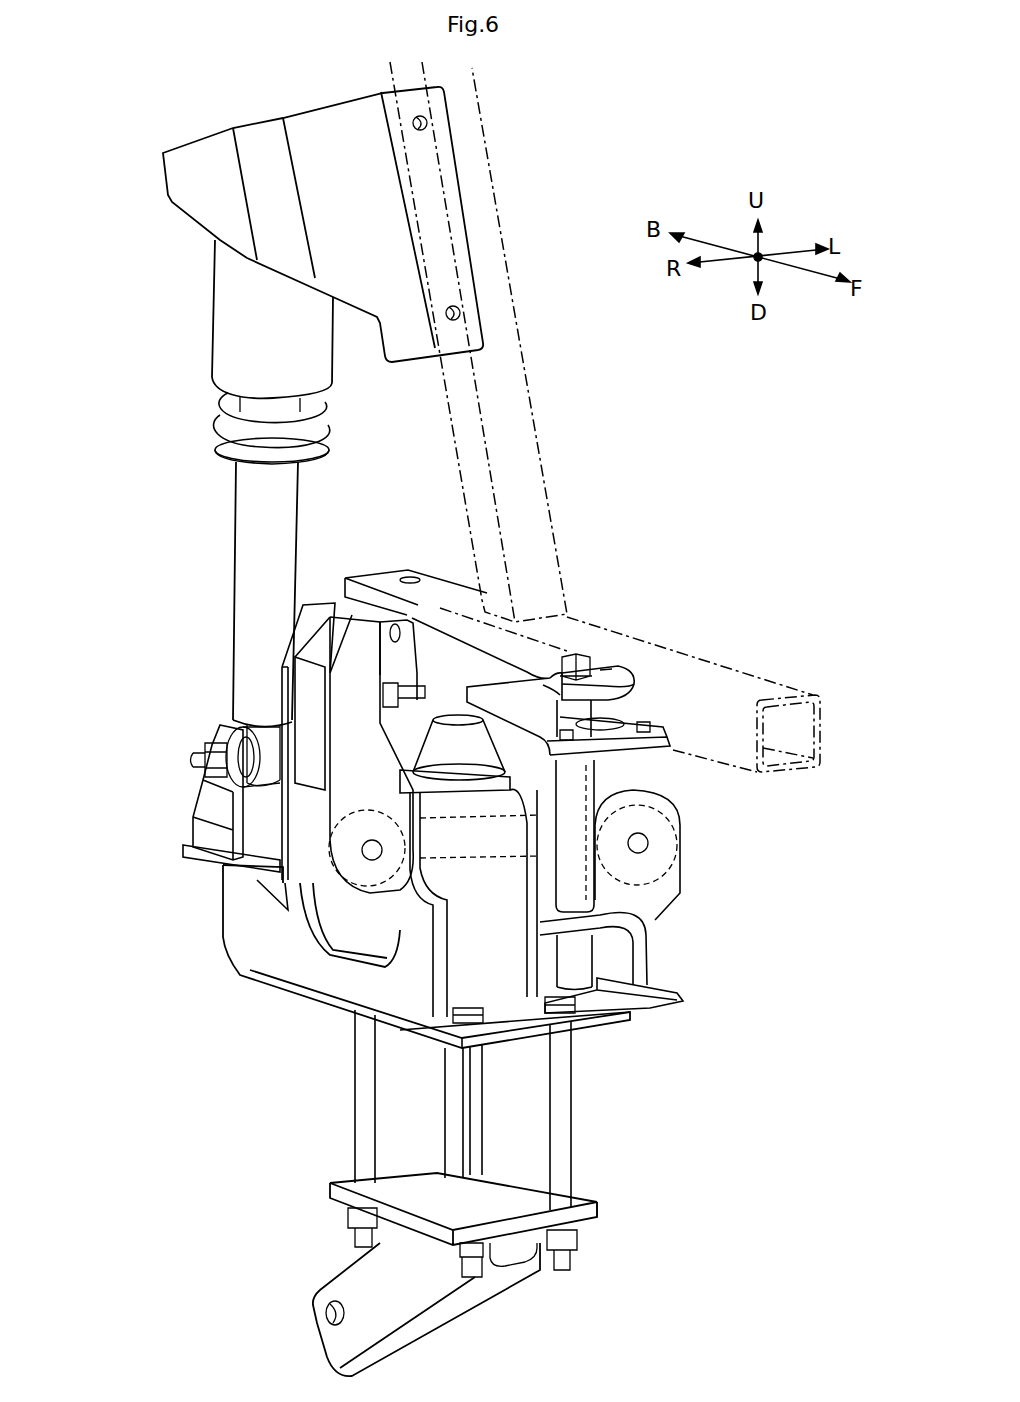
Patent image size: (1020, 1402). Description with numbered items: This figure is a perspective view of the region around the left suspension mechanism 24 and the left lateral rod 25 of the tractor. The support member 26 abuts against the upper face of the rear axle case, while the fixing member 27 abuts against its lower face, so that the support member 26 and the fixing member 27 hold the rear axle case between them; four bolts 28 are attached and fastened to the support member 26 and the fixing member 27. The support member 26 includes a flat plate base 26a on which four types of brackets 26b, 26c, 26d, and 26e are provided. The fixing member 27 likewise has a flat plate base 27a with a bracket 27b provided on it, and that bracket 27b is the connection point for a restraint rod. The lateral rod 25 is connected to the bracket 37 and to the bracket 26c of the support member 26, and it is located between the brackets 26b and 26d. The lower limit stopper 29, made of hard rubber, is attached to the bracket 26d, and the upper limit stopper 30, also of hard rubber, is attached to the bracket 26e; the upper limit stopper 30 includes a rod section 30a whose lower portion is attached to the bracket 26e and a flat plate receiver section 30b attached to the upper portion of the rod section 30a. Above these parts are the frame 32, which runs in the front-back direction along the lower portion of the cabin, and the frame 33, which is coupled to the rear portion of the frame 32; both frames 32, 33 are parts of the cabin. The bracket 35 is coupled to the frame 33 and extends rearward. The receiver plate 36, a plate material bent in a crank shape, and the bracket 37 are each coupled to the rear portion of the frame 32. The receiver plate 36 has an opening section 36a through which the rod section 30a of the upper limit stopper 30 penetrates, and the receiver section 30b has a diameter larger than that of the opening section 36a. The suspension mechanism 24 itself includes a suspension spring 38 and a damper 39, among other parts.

The suspension mechanism 24 is at (210, 331).
The lateral rod 25 is at (547, 837).
The support member 26 is at (222, 897).
The base 26a is at (598, 1025).
The bracket 26b is at (193, 847).
The bracket 26c is at (672, 873).
The bracket 26d is at (507, 977).
The bracket 26e is at (637, 918).
The fixing member 27 is at (322, 1190).
The base 27a is at (598, 1213).
The bracket 27b is at (447, 1320).
The bolt 28 is at (362, 1073).
The lower limit stopper 29 is at (430, 735).
The upper limit stopper 30 is at (630, 673).
The rod section 30a is at (580, 775).
The receiver section 30b is at (608, 675).
The frame 32 is at (690, 655).
The frame 33 is at (533, 372).
The bracket 35 is at (185, 180).
The receiver plate 36 is at (445, 660).
The opening section 36a is at (603, 717).
The bracket 37 is at (343, 740).
The suspension spring 38 is at (225, 432).
The damper 39 is at (248, 560).